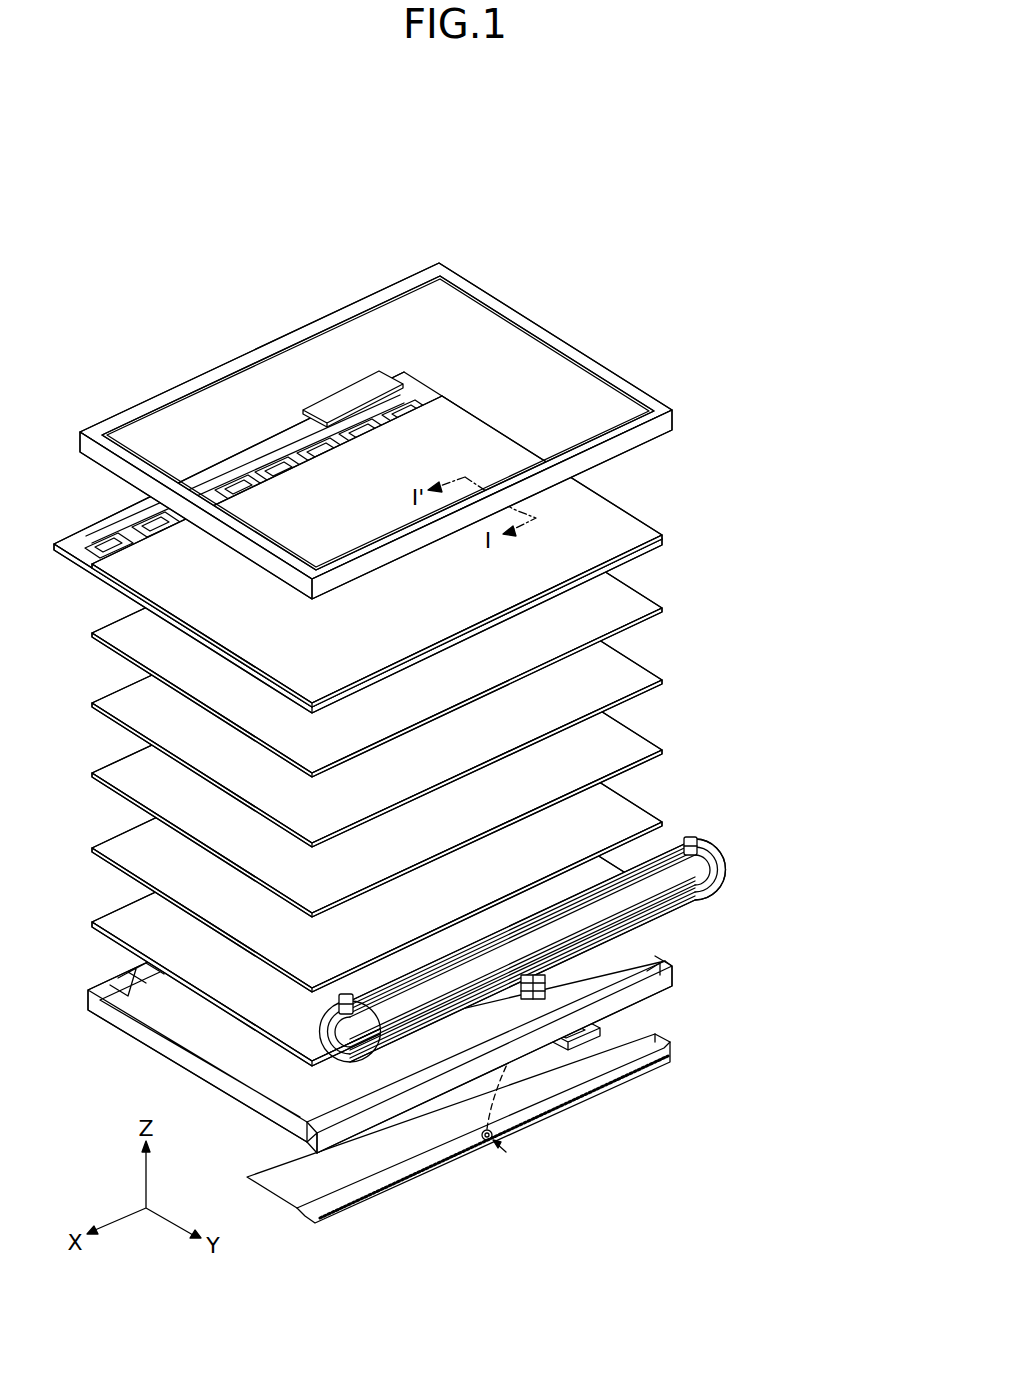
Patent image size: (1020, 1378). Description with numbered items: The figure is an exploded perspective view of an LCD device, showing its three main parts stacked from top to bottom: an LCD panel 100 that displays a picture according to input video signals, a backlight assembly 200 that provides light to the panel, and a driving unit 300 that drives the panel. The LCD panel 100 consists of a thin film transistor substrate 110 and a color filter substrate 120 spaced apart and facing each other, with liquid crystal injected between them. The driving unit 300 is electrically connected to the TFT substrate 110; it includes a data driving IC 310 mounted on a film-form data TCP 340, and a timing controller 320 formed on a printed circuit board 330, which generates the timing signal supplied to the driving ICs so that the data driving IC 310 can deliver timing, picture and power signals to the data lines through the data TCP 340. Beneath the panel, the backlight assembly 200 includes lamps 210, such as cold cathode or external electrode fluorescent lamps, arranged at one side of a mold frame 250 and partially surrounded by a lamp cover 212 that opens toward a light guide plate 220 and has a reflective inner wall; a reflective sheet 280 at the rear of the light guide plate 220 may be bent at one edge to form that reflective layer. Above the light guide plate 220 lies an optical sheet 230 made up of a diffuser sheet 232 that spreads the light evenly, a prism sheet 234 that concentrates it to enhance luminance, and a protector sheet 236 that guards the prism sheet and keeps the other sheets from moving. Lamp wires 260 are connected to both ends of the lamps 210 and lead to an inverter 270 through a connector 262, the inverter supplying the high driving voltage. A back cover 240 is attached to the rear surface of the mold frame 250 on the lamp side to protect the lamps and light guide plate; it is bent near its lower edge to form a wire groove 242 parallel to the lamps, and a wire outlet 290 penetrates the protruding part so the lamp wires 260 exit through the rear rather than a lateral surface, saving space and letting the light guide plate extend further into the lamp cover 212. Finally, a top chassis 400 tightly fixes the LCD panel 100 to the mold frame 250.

The LCD panel 100 is at (434, 489).
The thin film transistor substrate 110 is at (656, 552).
The color filter substrate 120 is at (656, 528).
The backlight assembly 200 is at (479, 849).
The lamps 210 is at (425, 1025).
The lamp cover 212 is at (722, 868).
The light guide plate 220 is at (644, 812).
The optical sheet 230 is at (453, 692).
The diffuser sheet 232 is at (651, 749).
The prism sheet 234 is at (651, 677).
The protector sheet 236 is at (762, 754).
The back cover 240 is at (473, 1119).
The wire groove 242 is at (583, 1101).
The mold frame 250 is at (668, 981).
The lamp wires 260 is at (552, 939).
The connector 262 is at (600, 993).
The inverter 270 is at (581, 1047).
The reflective sheet 280 is at (660, 853).
The wire outlet 290 is at (481, 1141).
The driving unit 300 is at (257, 411).
The data driving IC 310 is at (334, 355).
The timing controller 320 is at (403, 410).
The printed circuit board 330 is at (250, 435).
The data tape carrier package 340 is at (103, 537).
The top chassis 400 is at (674, 421).